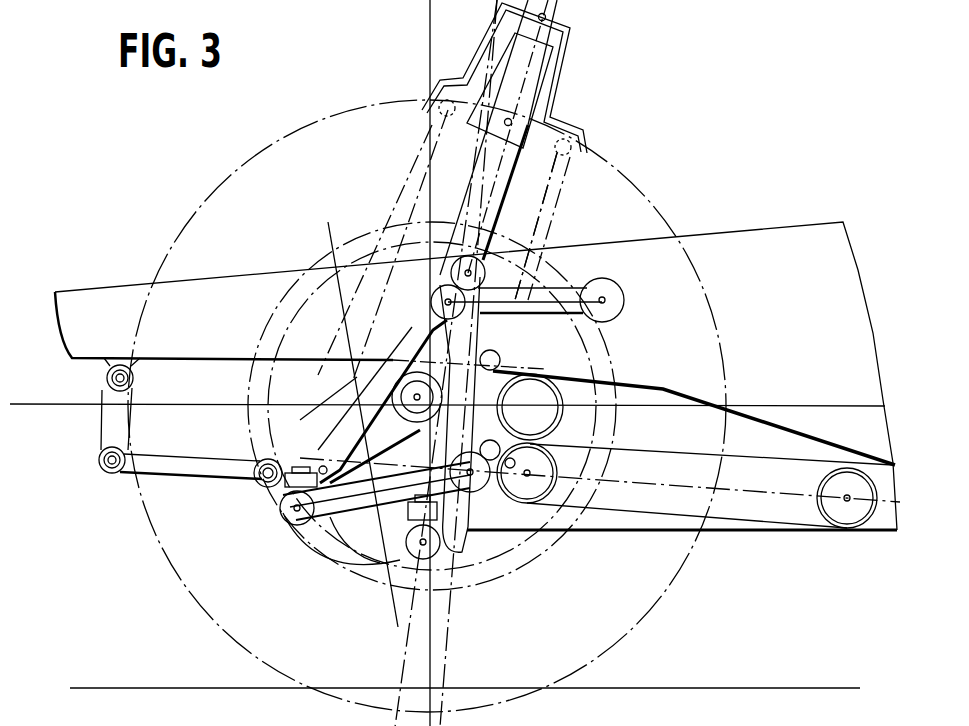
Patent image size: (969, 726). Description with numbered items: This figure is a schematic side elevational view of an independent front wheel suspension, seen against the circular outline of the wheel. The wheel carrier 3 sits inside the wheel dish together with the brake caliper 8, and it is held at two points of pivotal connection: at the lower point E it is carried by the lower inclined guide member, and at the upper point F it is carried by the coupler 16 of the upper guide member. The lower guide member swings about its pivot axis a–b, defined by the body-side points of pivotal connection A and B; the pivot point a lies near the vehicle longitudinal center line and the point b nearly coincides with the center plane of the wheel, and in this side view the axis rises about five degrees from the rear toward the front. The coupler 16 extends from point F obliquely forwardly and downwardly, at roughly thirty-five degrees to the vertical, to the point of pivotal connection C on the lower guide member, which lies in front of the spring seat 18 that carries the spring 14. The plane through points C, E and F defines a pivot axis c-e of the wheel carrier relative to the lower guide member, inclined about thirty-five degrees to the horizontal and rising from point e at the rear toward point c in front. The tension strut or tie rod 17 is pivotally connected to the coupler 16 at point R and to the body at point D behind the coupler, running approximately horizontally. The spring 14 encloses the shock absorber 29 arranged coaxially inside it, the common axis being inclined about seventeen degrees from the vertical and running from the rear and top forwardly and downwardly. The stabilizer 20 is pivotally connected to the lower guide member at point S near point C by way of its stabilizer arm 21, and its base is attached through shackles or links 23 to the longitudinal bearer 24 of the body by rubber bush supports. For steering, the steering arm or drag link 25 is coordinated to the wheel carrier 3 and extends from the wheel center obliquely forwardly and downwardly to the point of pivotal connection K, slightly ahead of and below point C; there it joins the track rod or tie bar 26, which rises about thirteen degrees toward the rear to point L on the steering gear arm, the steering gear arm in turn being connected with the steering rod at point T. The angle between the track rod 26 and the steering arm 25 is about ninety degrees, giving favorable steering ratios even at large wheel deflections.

The wheel carrier 3 is at (470, 538).
The brake caliper 8 is at (606, 362).
The spring 14 is at (553, 202).
The coupler 16 is at (345, 430).
The tension strut or tie rod 17 is at (560, 290).
The spring seat 18 is at (347, 430).
The stabilizer 20 is at (124, 478).
The stabilizer arm 21 is at (201, 478).
The shackles or links 23 is at (105, 420).
The longitudinal bearer 24 is at (78, 323).
The steering arm or drag link 25 is at (376, 494).
The track rod or tie bar 26 is at (330, 540).
The shock absorber 29 is at (538, 80).
The point of pivotal connection A is at (545, 478).
The point of pivotal connection B is at (832, 502).
The point of pivotal connection C is at (322, 465).
The point of pivotal connection D is at (606, 296).
The point of pivotal connection E is at (417, 556).
The point of pivotal connection F is at (469, 268).
The point of pivotal connection K is at (292, 520).
The point of pivotal connection L is at (530, 407).
The point of pivotal connection R is at (440, 302).
The point of pivotal connection S is at (262, 484).
The point T is at (474, 490).
The point of pivotal connection a is at (468, 468).
The point of pivotal connection b is at (785, 492).
The point c of pivot axis c-e c is at (300, 462).
The point e of pivot axis c- e is at (495, 578).